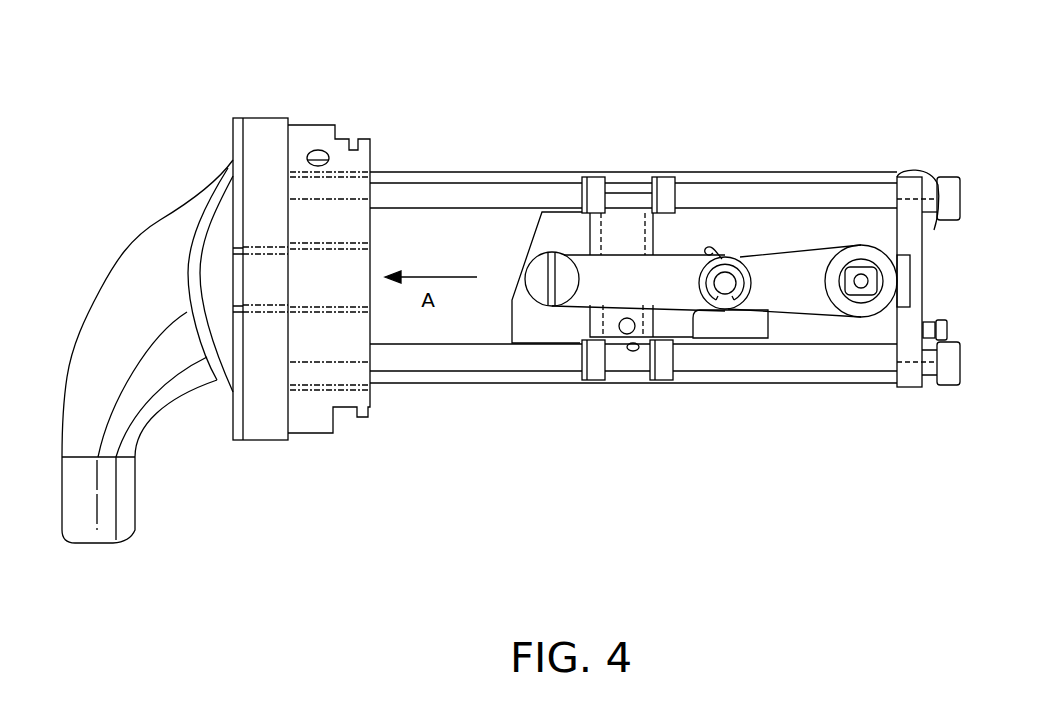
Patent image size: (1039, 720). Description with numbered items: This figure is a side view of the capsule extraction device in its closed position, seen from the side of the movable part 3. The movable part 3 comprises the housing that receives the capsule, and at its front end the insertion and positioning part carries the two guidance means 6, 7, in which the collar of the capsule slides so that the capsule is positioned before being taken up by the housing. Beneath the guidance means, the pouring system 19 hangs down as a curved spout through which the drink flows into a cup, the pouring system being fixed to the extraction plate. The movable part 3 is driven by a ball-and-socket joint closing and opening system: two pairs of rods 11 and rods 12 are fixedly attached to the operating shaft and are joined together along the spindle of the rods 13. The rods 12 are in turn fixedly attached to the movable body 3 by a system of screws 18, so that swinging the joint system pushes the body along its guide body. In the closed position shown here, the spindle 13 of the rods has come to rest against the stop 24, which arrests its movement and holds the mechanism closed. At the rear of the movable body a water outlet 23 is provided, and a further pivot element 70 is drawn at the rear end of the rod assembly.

The movable part 3 is at (488, 230).
The guidance means 6 is at (334, 236).
The guidance means 7 is at (352, 147).
The rods 11 is at (808, 307).
The rods 12 is at (612, 295).
The spindle of the rods 13 is at (730, 281).
The screws 18 is at (535, 288).
The pouring system 19 is at (118, 508).
The water outlet 23 is at (947, 328).
The stop 24 is at (730, 325).
The pivot bearing 70 is at (862, 268).